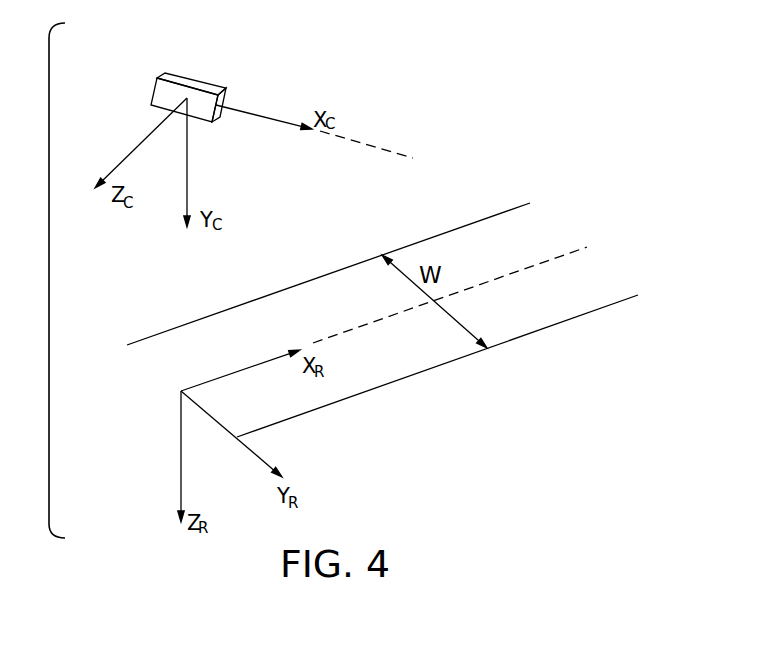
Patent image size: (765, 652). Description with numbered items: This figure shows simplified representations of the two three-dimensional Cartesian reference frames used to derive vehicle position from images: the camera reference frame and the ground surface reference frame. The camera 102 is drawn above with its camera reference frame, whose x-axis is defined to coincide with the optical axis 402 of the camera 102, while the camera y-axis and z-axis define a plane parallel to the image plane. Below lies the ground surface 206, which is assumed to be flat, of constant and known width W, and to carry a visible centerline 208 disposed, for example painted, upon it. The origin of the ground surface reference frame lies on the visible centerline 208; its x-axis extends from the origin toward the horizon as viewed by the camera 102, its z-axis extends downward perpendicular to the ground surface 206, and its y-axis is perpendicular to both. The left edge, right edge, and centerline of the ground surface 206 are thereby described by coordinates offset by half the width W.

The camera 102 is at (190, 82).
The optical axis 402 is at (392, 152).
The ground surface 206 is at (588, 302).
The visible centerline 208 is at (563, 253).